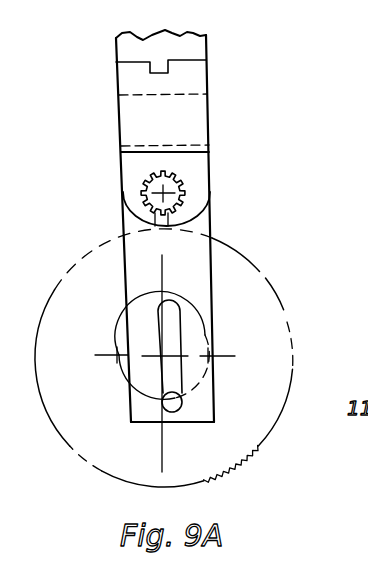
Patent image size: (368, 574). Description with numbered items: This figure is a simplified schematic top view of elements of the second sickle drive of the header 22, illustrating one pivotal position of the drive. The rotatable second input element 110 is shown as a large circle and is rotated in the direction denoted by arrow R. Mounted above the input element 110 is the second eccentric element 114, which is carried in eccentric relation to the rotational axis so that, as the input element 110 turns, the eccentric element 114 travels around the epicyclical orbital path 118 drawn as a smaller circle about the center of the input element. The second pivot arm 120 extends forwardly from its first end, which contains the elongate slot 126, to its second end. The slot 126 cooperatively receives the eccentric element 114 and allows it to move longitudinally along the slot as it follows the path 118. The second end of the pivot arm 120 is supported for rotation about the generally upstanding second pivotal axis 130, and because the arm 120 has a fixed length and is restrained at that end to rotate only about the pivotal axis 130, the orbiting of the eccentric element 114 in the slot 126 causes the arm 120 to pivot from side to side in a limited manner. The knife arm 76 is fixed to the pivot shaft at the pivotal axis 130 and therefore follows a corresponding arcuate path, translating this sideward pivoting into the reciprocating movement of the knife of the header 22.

The header 22 is at (258, 61).
The knife arm 76 is at (209, 80).
The second pivotal axis 130 is at (176, 185).
The second pivot arm 120 is at (215, 302).
The epicyclical orbital path 118 is at (122, 375).
The elongate slot 126 is at (174, 338).
The second eccentric element 114 is at (182, 403).
The second input element 110 is at (67, 443).
The arrow R is at (300, 275).